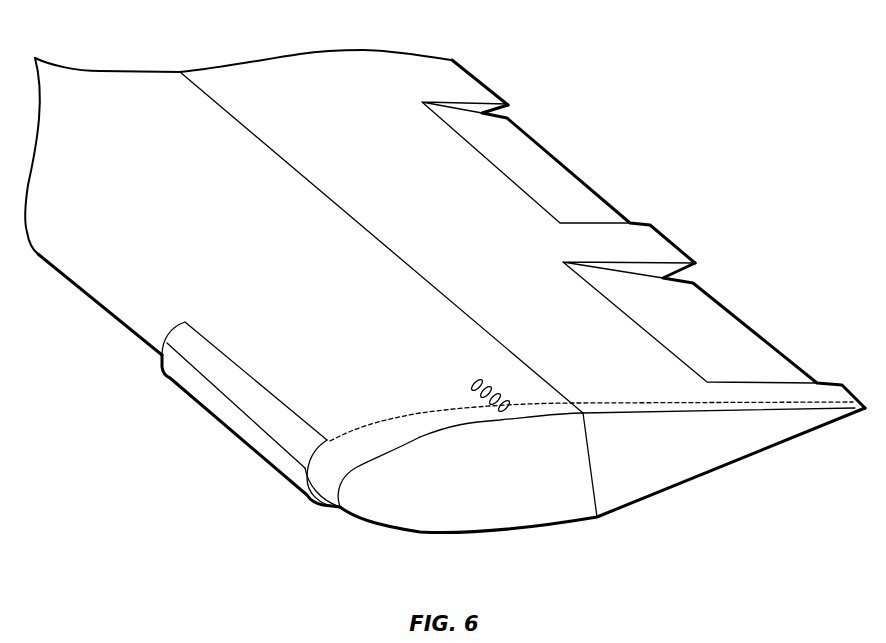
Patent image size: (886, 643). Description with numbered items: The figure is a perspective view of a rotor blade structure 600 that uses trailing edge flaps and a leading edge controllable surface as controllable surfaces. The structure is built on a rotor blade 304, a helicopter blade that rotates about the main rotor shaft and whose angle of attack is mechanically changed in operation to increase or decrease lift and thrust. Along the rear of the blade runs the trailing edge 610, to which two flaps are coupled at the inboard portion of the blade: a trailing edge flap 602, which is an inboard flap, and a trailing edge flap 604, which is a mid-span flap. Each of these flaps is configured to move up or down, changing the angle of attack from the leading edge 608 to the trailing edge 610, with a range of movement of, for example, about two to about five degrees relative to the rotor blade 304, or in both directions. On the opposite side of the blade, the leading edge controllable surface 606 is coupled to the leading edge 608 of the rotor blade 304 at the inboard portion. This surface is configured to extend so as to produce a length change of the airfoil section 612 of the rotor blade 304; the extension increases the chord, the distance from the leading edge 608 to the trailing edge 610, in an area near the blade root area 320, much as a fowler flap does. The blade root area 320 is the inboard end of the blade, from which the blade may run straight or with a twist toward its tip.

The rotor blade structure 600 is at (742, 44).
The rotor blade 304 is at (80, 90).
The trailing edge 610 is at (472, 76).
The trailing edge flap 604 is at (550, 180).
The trailing edge flap 602 is at (717, 325).
The leading edge 608 is at (103, 306).
The leading edge controllable surface 606 is at (212, 397).
The airfoil section 612 is at (355, 432).
The blade root area 320 is at (532, 506).